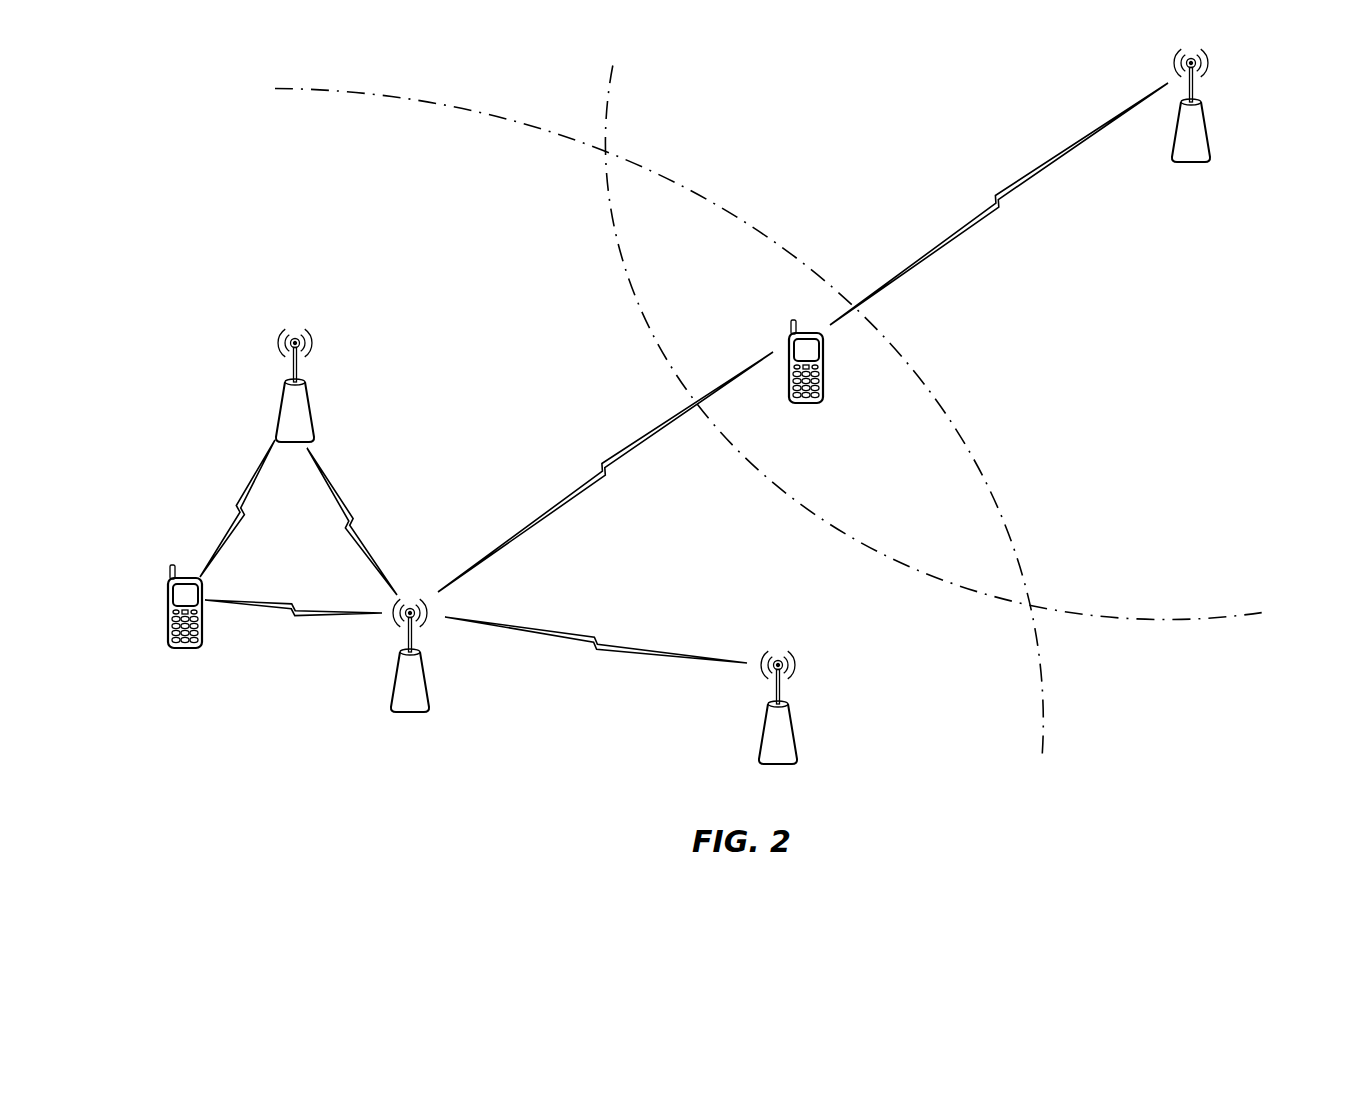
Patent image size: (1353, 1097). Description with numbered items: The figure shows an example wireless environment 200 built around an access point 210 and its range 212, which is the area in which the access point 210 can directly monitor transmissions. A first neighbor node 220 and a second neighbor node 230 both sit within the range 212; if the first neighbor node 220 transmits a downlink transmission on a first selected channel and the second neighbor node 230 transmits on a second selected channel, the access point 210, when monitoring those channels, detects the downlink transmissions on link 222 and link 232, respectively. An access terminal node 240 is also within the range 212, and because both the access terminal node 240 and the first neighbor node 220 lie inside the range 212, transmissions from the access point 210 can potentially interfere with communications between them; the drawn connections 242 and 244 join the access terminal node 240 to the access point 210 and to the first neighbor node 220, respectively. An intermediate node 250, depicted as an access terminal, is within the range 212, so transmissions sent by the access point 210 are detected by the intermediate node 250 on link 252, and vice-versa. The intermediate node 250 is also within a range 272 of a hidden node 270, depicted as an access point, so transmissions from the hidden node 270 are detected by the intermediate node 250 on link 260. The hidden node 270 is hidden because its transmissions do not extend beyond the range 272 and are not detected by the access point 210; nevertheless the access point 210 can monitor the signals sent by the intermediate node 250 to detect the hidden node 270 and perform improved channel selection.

The wireless environment 200 is at (1225, 717).
The access point 210 is at (397, 682).
The range 212 is at (442, 103).
The first neighbor node 220 is at (285, 412).
The link 222 is at (350, 500).
The second neighbor node 230 is at (790, 733).
The link 232 is at (572, 628).
The access terminal node 240 is at (168, 615).
The communication link 242 is at (268, 600).
The communication link 244 is at (232, 504).
The intermediate node 250 is at (823, 372).
The link 252 is at (577, 486).
The link 260 is at (1072, 152).
The hidden node 270 is at (1208, 132).
The range 272 is at (868, 545).